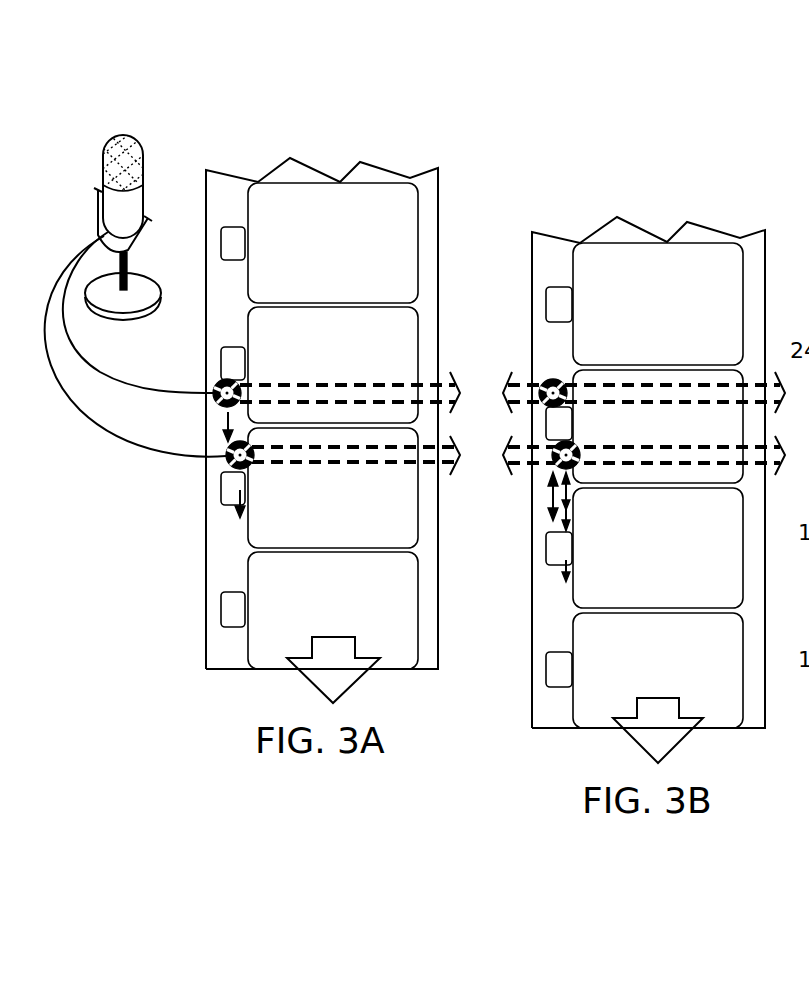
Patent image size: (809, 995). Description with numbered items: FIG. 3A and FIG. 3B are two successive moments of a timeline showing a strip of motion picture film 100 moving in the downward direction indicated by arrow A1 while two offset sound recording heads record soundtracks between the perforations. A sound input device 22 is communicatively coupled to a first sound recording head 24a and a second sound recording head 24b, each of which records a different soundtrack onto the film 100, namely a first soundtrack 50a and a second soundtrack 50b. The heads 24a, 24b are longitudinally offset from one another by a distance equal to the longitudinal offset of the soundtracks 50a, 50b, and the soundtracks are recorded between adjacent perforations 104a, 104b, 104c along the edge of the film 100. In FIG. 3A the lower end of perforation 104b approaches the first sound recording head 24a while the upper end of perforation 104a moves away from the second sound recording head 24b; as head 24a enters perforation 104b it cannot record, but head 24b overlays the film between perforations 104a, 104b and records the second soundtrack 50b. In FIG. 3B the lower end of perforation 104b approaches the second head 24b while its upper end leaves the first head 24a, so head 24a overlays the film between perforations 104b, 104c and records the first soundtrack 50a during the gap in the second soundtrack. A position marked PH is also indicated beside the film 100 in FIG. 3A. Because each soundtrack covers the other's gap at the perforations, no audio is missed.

In FIG. 3A, the sound input device 22 is at (120, 142).
In FIG. 3A, the film 100 is at (428, 188).
In FIG. 3A, the perforation 104a is at (225, 490).
In FIG. 3B, the perforation 104a is at (555, 553).
In FIG. 3A, the perforation 104b is at (240, 362).
In FIG. 3B, the perforation 104b is at (565, 430).
In FIG. 3A, the perforation 104c is at (240, 242).
In FIG. 3B, the perforation 104c is at (565, 303).
In FIG. 3A, the first sound recording head 24a is at (213, 388).
In FIG. 3B, the first sound recording head 24a is at (540, 385).
In FIG. 3A, the second sound recording head 24b is at (225, 462).
In FIG. 3B, the second sound recording head 24b is at (555, 465).
In FIG. 3A, the first soundtrack 50a is at (222, 432).
In FIG. 3B, the first soundtrack 50a is at (548, 500).
In FIG. 3A, the second soundtrack 50b is at (246, 510).
In FIG. 3B, the second soundtrack 50b is at (572, 515).
In FIG. 3A, the print head position mark PH is at (225, 612).
In FIG. 3A, the arrow A1 is at (333, 652).
In FIG. 3B, the arrow A1 is at (658, 714).